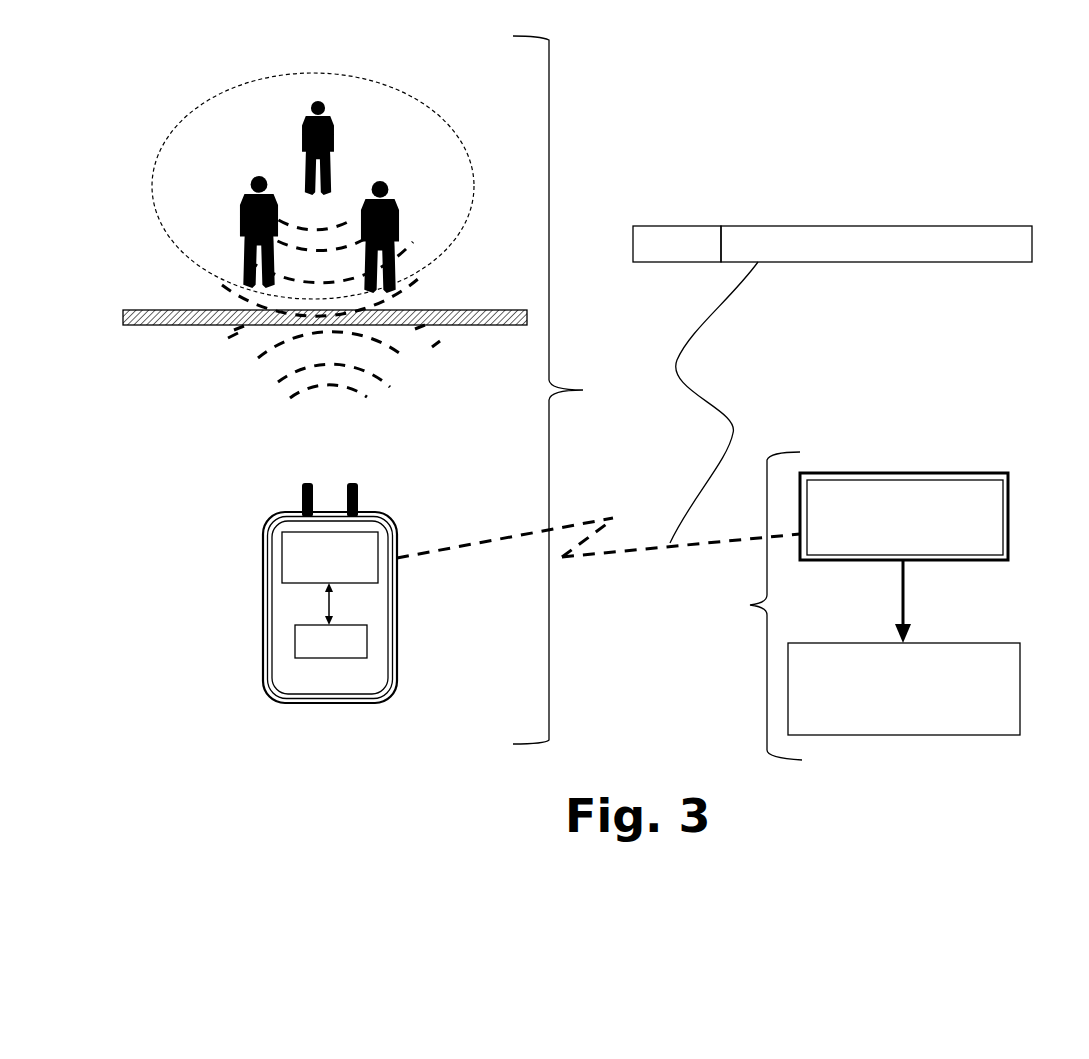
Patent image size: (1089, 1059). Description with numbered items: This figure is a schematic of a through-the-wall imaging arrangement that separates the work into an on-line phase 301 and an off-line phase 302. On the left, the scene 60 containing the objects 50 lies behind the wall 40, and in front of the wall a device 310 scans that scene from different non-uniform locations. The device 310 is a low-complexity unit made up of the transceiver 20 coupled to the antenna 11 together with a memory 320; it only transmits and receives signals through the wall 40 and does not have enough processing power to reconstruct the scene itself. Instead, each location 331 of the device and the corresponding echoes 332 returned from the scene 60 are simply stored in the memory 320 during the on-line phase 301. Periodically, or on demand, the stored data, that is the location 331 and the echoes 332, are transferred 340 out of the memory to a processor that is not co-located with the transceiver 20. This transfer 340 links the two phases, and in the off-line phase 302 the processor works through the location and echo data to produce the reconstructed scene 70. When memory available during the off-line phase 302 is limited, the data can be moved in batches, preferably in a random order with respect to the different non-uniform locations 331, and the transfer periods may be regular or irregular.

The scene 60 is at (171, 137).
The objects 50 is at (313, 103).
The wall 40 is at (487, 310).
The antenna 11 is at (360, 495).
The transceiver 20 is at (283, 556).
The memory 320 is at (367, 640).
The transfer 340 is at (437, 546).
The device 310 is at (303, 579).
The location 331 is at (662, 226).
The echoes 332 is at (863, 226).
The on-line phase 301 is at (581, 390).
The off-line phase 302 is at (750, 605).
The reconstructed scene 70 is at (980, 643).